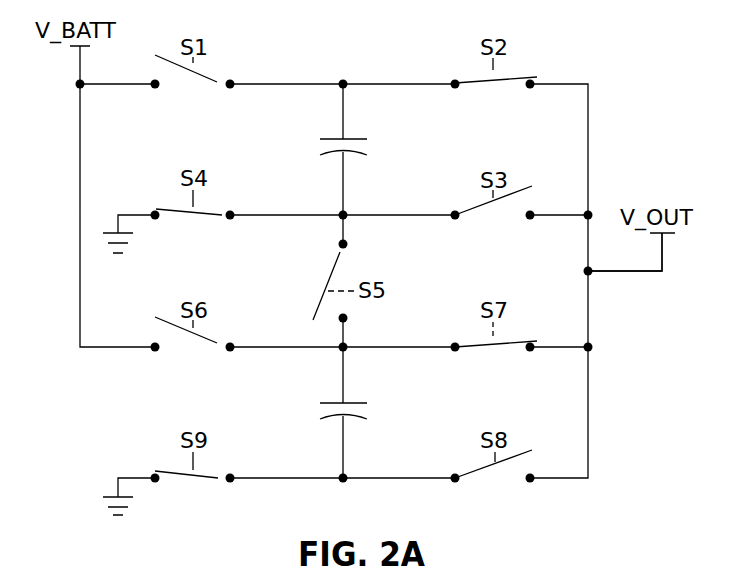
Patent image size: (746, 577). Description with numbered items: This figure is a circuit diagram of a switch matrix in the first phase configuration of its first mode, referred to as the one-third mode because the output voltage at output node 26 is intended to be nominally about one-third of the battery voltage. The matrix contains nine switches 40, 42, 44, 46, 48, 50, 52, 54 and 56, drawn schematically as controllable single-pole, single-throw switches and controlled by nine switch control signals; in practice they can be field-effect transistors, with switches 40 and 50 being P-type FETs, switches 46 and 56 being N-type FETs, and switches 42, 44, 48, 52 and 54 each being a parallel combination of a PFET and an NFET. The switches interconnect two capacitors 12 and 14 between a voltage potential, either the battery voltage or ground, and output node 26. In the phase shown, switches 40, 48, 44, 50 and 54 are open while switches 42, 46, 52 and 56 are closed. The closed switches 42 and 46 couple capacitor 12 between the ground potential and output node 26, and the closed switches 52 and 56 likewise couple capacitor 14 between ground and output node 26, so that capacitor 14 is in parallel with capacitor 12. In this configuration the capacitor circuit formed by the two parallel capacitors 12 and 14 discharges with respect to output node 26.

The capacitor 12 is at (355, 153).
The capacitor 14 is at (355, 417).
The output node 26 is at (635, 272).
The switch 40 is at (212, 86).
The switch 42 is at (481, 87).
The switch 44 is at (500, 198).
The switch 46 is at (210, 218).
The switch 48 is at (330, 263).
The switch 50 is at (212, 349).
The switch 52 is at (481, 350).
The switch 54 is at (505, 462).
The switch 56 is at (210, 481).